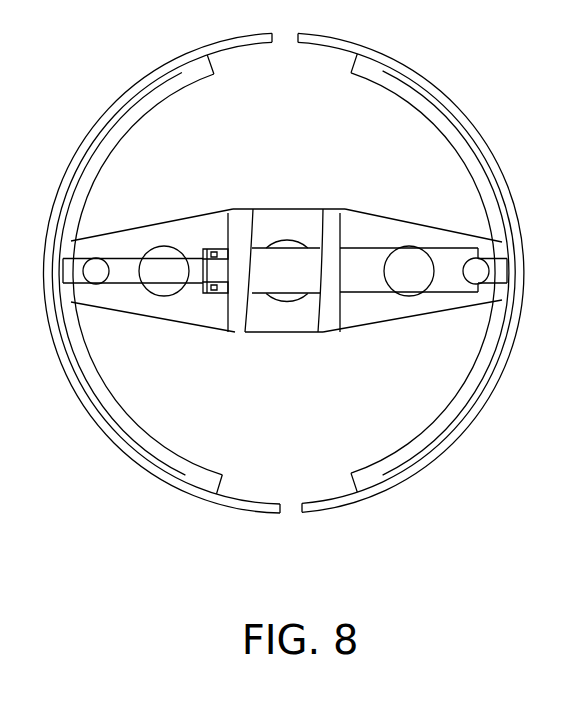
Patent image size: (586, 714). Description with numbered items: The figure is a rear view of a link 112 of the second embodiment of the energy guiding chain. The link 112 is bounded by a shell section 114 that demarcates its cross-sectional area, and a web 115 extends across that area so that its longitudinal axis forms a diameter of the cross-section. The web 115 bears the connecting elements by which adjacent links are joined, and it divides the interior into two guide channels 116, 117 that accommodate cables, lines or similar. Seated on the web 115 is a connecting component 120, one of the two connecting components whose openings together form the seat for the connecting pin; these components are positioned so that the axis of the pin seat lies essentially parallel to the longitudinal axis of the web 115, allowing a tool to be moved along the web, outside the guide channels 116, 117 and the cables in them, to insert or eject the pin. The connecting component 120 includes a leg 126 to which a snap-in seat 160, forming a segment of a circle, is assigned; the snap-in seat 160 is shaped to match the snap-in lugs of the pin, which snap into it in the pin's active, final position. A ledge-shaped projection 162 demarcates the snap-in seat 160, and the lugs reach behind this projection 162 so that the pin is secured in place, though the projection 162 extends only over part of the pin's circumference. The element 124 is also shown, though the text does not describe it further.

The link 112 is at (299, 297).
The shell section 114 is at (491, 144).
The web 115 is at (398, 240).
The guide channel 116 is at (343, 162).
The guide channel 117 is at (343, 419).
The connecting component 120 is at (285, 250).
The plate 124 is at (332, 313).
The leg 126 is at (240, 320).
The snap-in seat 160 is at (207, 249).
The ledge-shaped projection 162 is at (200, 287).